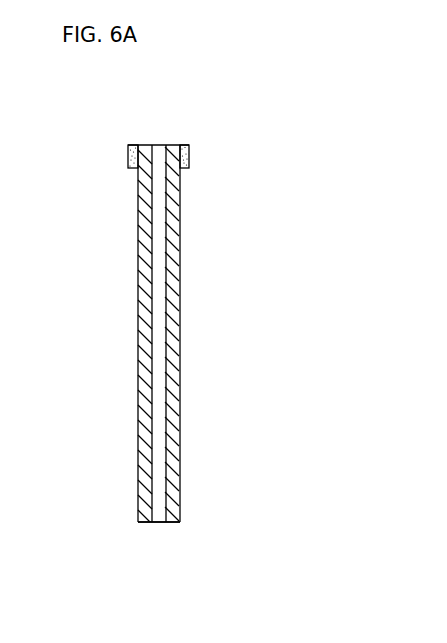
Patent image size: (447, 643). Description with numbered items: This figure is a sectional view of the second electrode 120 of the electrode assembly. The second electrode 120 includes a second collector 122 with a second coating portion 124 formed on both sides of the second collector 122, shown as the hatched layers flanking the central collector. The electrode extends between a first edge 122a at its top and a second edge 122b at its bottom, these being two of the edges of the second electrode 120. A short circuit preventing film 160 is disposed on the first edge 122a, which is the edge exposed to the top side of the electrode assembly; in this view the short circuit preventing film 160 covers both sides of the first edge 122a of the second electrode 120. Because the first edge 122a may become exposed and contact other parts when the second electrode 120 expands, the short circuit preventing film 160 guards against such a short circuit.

The second electrode 120 is at (110, 115).
The second collector 122 is at (158, 368).
The first edge 122a is at (156, 121).
The second edge 122b is at (161, 545).
The second coating portion 124 is at (147, 313).
The short circuit preventing film 160 is at (128, 156).